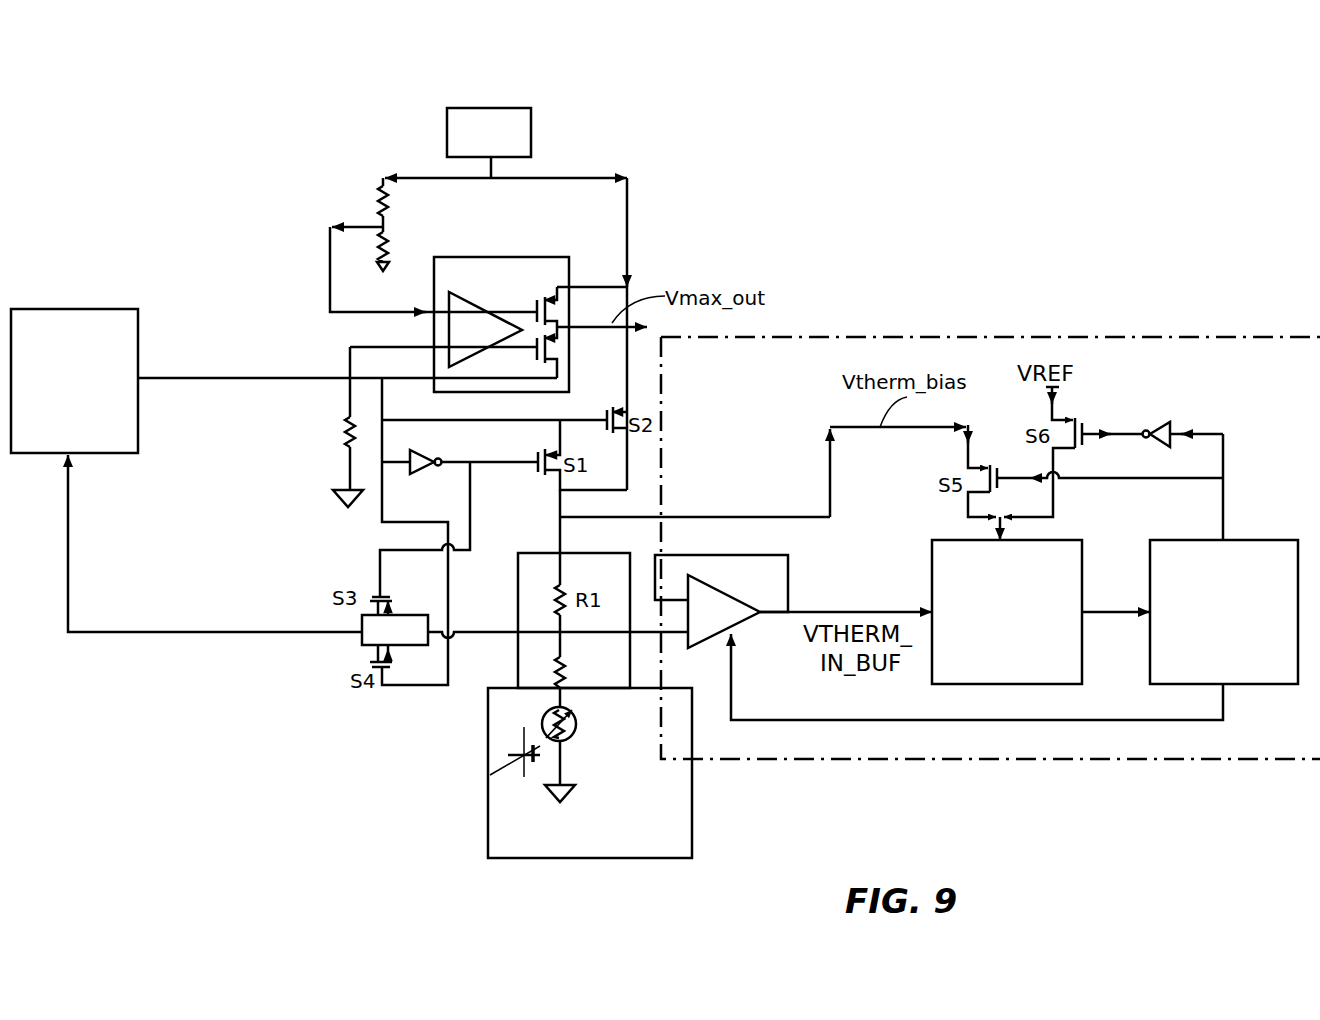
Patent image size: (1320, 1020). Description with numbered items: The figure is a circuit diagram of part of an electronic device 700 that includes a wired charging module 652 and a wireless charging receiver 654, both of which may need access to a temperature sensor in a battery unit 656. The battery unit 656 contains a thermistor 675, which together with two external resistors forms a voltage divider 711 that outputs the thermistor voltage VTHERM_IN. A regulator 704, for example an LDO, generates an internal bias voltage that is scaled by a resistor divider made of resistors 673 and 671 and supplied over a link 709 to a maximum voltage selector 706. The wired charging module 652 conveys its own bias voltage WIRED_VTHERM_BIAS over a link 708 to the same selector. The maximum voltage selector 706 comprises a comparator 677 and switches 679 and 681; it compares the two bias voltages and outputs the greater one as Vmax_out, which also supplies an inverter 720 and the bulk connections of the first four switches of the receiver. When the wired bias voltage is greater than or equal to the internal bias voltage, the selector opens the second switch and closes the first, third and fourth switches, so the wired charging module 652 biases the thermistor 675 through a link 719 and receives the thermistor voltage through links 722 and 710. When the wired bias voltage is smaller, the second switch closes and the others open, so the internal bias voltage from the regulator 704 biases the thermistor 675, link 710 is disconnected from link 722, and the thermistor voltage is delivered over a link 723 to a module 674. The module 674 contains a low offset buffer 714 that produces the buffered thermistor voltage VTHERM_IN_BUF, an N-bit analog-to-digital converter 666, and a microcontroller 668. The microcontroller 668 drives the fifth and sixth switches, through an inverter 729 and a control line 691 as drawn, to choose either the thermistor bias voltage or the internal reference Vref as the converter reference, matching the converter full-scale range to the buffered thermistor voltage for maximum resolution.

The electronic device 700 is at (140, 117).
The wireless charging receiver 654 is at (971, 83).
The regulator 704 is at (525, 108).
The resistor 673 is at (388, 204).
The resistor 671 is at (383, 246).
The link 709 is at (330, 296).
The maximum voltage selector 706 is at (434, 305).
The comparator 677 is at (467, 295).
The switch 679 is at (560, 280).
The switch 681 is at (562, 355).
The wired charging module 652 is at (105, 309).
The link 708 is at (180, 380).
The inverter 720 is at (426, 470).
The link 719 is at (560, 533).
The voltage divider 711 is at (580, 553).
The link 722 is at (490, 632).
The link 723 is at (567, 634).
The link 710 is at (222, 634).
The thermistor 675 is at (572, 744).
The battery unit 656 is at (692, 794).
The module 674 is at (1142, 762).
The low offset buffer 714 is at (708, 640).
The control feedback line 691 is at (878, 722).
The inverter 729 is at (1170, 422).
The N-bit analog-to-digital converter 666 is at (932, 563).
The microcontroller 668 is at (1248, 686).